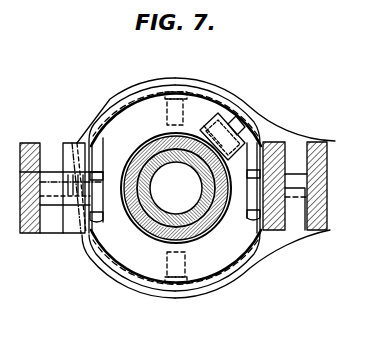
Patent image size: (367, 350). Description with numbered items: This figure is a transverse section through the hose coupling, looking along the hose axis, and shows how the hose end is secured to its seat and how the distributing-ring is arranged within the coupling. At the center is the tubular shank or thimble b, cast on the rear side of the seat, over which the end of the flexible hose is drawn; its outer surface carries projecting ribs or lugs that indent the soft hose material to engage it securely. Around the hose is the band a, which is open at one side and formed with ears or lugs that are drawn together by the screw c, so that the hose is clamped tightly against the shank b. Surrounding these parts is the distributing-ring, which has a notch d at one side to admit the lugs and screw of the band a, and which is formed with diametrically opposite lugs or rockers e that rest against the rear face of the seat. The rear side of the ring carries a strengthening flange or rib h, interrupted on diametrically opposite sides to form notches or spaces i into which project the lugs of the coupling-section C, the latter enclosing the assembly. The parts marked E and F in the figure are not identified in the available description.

The band a is at (250, 174).
The tubular shank or thimble b is at (176, 188).
The screw c is at (212, 134).
The notch d is at (218, 112).
The lugs or rockers e is at (175, 265).
The strengthening flange or rib h is at (133, 101).
The notches or spaces i is at (256, 199).
The coupling-section C is at (241, 104).
The bearing bracket E is at (278, 141).
The flange F is at (179, 179).